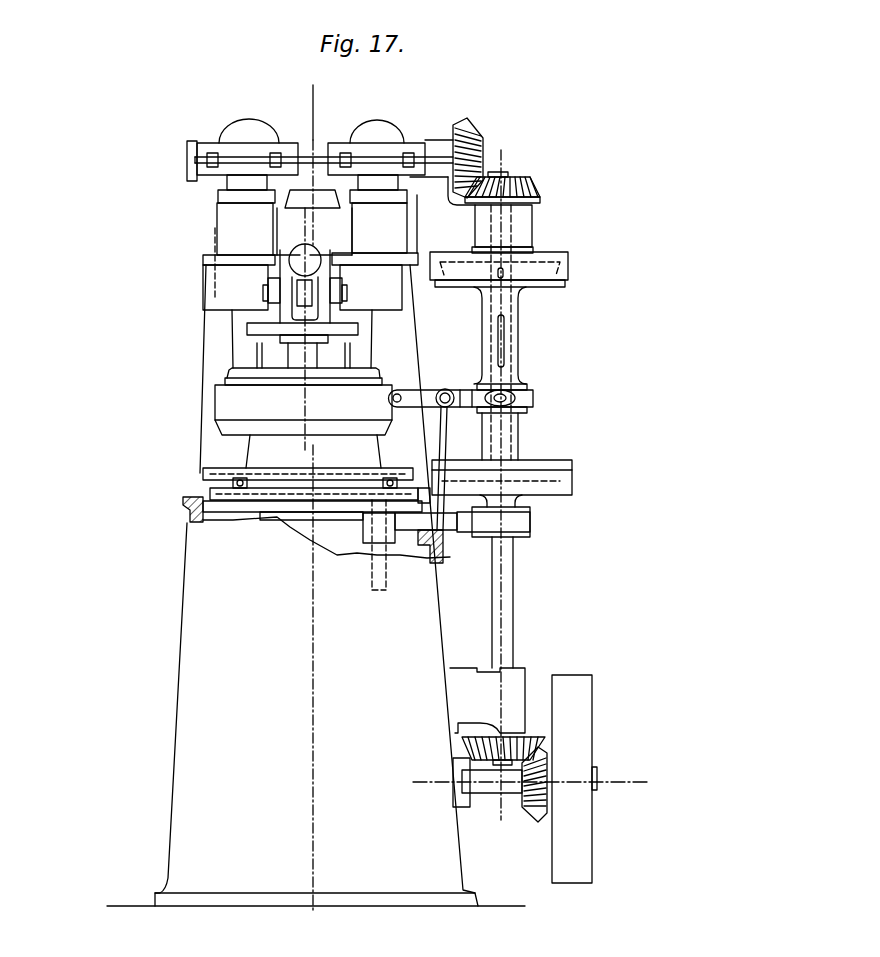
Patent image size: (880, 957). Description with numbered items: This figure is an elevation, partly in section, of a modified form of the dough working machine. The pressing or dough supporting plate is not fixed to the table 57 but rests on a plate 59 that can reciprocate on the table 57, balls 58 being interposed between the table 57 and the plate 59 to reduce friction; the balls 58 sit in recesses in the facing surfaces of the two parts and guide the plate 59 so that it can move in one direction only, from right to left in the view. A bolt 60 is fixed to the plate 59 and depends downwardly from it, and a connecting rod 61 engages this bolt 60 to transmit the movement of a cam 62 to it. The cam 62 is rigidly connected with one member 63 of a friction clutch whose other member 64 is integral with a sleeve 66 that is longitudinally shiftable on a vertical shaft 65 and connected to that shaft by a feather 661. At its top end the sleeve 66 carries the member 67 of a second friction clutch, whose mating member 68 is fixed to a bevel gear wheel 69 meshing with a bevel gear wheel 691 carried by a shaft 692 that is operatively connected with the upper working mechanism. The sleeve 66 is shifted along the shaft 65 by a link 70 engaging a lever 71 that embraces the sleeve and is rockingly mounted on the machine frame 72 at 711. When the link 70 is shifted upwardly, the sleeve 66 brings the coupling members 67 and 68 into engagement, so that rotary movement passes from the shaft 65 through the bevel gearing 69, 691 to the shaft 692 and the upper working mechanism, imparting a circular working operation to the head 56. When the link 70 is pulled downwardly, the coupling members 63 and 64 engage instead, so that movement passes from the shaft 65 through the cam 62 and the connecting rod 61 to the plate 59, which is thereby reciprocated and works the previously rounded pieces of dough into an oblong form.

The head 56 is at (232, 398).
The table 57 is at (240, 490).
The balls 58 is at (236, 483).
The plate 59 is at (215, 470).
The bolt 60 is at (378, 550).
The connecting rod 61 is at (413, 545).
The cam 62 is at (522, 521).
The friction clutch member 63 is at (572, 483).
The friction clutch member 64 is at (560, 465).
The vertical shaft 65 is at (515, 599).
The sleeve 66 is at (512, 352).
The feather 661 is at (507, 328).
The friction clutch member 67 is at (552, 286).
The friction clutch member 68 is at (565, 268).
The bevel gear wheel 69 is at (525, 180).
The bevel gear wheel 691 is at (478, 140).
The shaft 692 is at (187, 156).
The link 70 is at (440, 443).
The lever 71 is at (428, 395).
The pivot 711 is at (400, 410).
The machine frame 72 is at (405, 355).